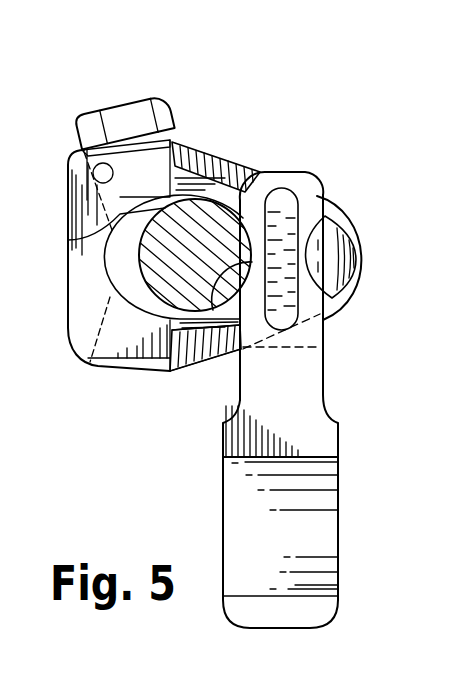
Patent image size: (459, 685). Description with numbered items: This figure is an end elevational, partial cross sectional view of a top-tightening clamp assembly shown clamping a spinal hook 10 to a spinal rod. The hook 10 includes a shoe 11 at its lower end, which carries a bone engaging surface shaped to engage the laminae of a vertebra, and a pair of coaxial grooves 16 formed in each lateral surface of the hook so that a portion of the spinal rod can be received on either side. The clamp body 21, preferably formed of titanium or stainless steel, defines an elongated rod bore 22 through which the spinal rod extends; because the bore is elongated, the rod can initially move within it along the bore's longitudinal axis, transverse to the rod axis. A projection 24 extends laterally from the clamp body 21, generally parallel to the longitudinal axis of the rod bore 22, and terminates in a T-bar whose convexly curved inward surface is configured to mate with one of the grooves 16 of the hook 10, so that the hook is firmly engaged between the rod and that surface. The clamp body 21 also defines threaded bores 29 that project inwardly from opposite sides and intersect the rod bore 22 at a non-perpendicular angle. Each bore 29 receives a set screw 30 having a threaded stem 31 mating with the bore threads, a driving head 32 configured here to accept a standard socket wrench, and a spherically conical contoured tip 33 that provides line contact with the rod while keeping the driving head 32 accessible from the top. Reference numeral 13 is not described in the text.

The spinal hook 10 is at (326, 379).
The shoe 11 is at (338, 527).
The arm side edge 13 is at (325, 346).
The coaxial grooves 16 is at (222, 366).
The clamp body 21 is at (80, 330).
The rod bore 22 is at (111, 272).
The projection 24 is at (185, 370).
The threaded bores 29 is at (76, 166).
The set screw 30 is at (177, 92).
The threaded stem 31 is at (172, 140).
The driving head 32 is at (128, 100).
The contoured tip 33 is at (76, 240).